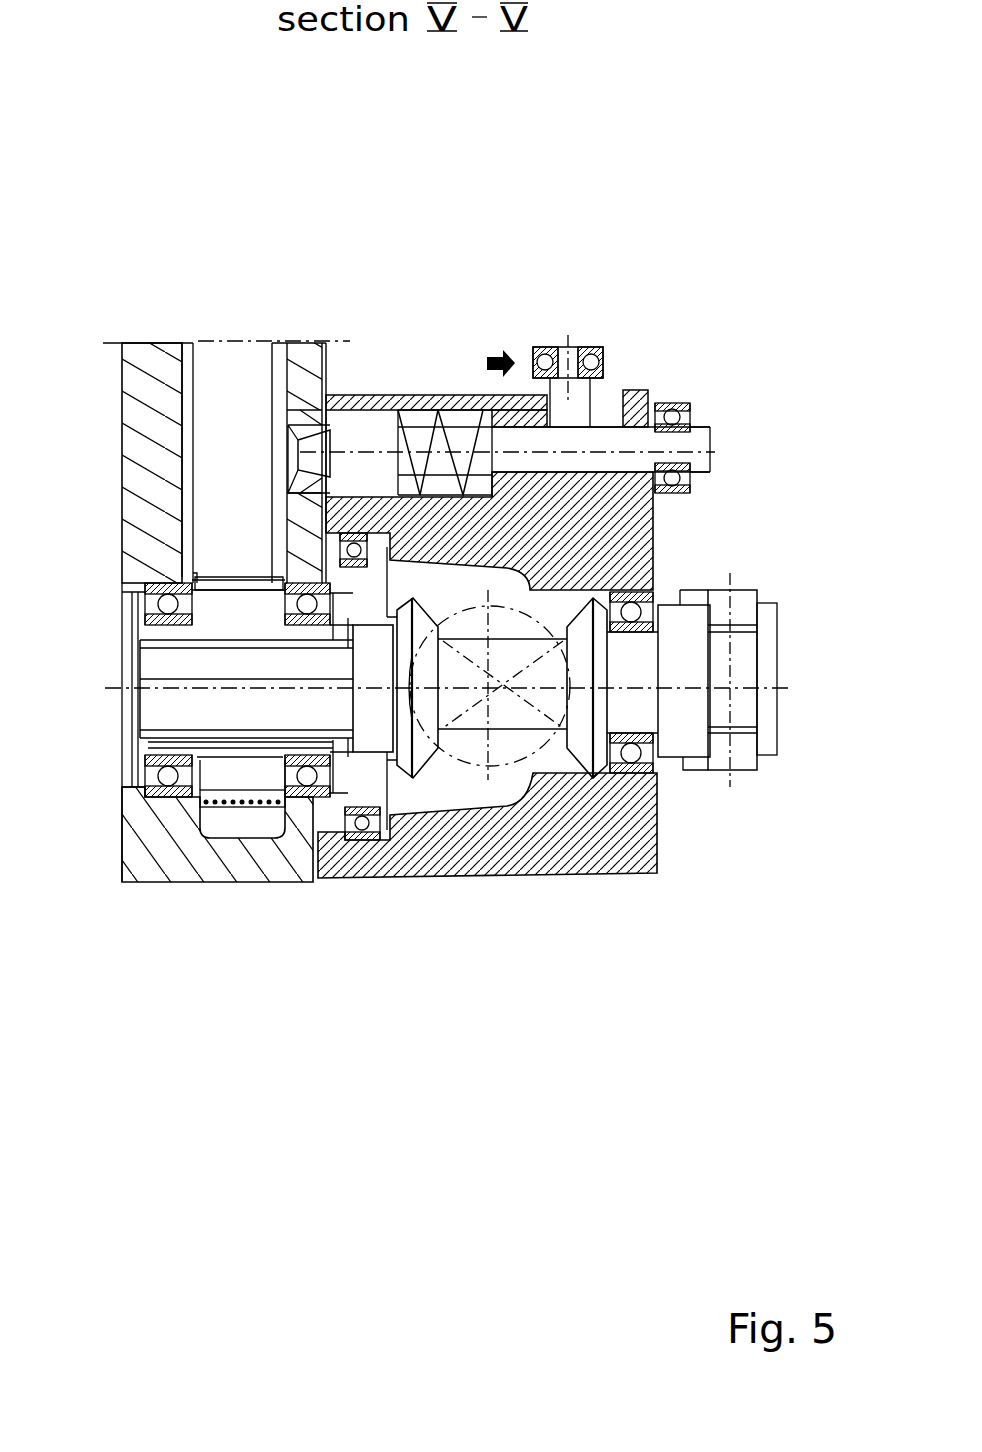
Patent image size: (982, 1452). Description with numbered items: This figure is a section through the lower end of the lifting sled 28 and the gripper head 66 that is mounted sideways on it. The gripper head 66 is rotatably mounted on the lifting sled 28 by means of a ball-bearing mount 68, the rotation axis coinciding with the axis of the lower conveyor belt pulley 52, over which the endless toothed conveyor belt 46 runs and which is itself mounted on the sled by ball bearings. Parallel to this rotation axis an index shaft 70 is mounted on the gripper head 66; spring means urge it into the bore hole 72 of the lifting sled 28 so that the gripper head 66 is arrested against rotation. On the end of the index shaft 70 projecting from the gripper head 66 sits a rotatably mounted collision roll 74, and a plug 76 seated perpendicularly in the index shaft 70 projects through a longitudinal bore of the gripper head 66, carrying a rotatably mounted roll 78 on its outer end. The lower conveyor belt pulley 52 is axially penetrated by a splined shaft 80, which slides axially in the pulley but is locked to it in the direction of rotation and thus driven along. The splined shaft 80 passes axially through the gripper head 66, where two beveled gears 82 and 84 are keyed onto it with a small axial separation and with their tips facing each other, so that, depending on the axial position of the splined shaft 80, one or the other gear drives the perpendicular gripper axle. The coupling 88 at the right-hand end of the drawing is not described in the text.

The lifting sled 28 is at (178, 857).
The endless toothed conveyor belt 46 is at (187, 342).
The lower conveyor belt pulley 52 is at (227, 762).
The gripper head 66 is at (513, 840).
The ball-bearing mount 68 is at (352, 805).
The index shaft 70 is at (377, 442).
The bore hole 72 is at (237, 403).
The collision roll 74 is at (672, 403).
The plug 76 is at (580, 398).
The roll 78 is at (537, 346).
The splined shaft 80 is at (512, 655).
The beveled gear 82 is at (423, 743).
The beveled gear 84 is at (585, 728).
The coupling 88 is at (713, 607).